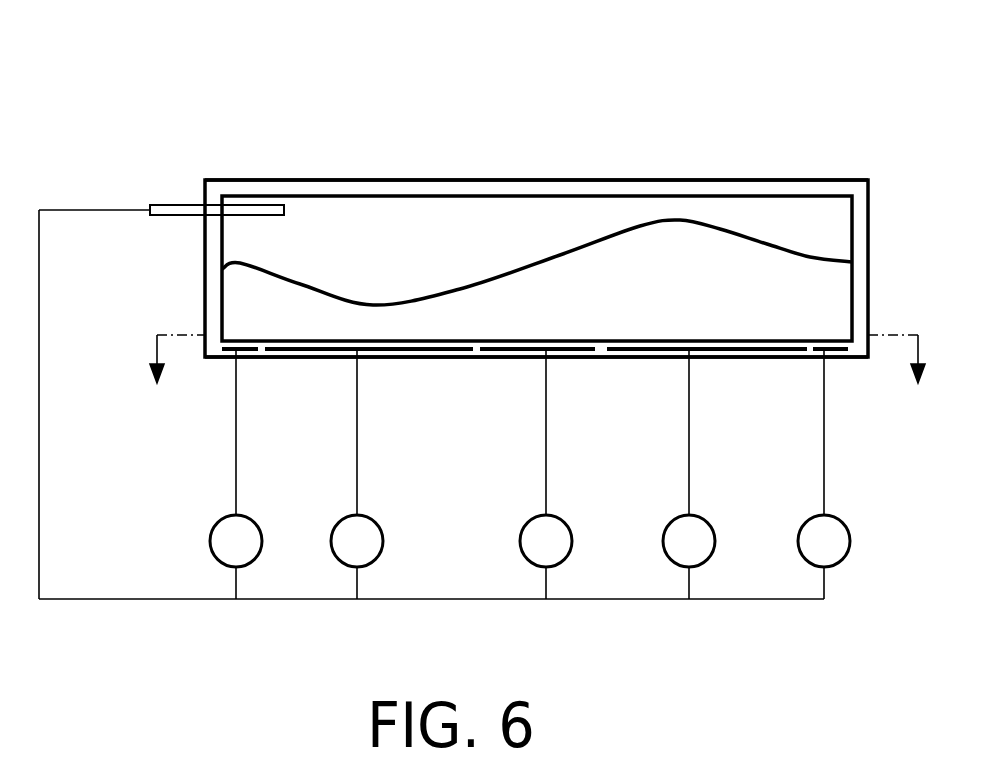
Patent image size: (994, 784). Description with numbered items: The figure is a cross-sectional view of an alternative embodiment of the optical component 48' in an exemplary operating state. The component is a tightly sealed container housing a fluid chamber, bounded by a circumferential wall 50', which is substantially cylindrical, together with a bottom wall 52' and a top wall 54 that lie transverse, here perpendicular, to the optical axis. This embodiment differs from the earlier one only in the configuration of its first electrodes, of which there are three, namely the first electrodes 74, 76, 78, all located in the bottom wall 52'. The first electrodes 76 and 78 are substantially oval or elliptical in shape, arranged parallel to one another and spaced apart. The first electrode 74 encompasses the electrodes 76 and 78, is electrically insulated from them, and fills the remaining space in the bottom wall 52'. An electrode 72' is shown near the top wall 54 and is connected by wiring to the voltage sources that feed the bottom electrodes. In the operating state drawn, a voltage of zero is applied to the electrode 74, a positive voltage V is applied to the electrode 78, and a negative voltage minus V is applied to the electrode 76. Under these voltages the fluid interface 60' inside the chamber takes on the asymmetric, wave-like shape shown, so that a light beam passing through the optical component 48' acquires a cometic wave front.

The optical component 48' is at (483, 305).
The circumferential wall 50' is at (493, 268).
The bottom wall 52' is at (536, 392).
The top wall 54 is at (535, 188).
The interface 60' is at (537, 214).
The common electrode 72' is at (217, 164).
The first electrode 74 is at (245, 353).
The first electrode 76 is at (638, 353).
The first electrode 78 is at (393, 353).